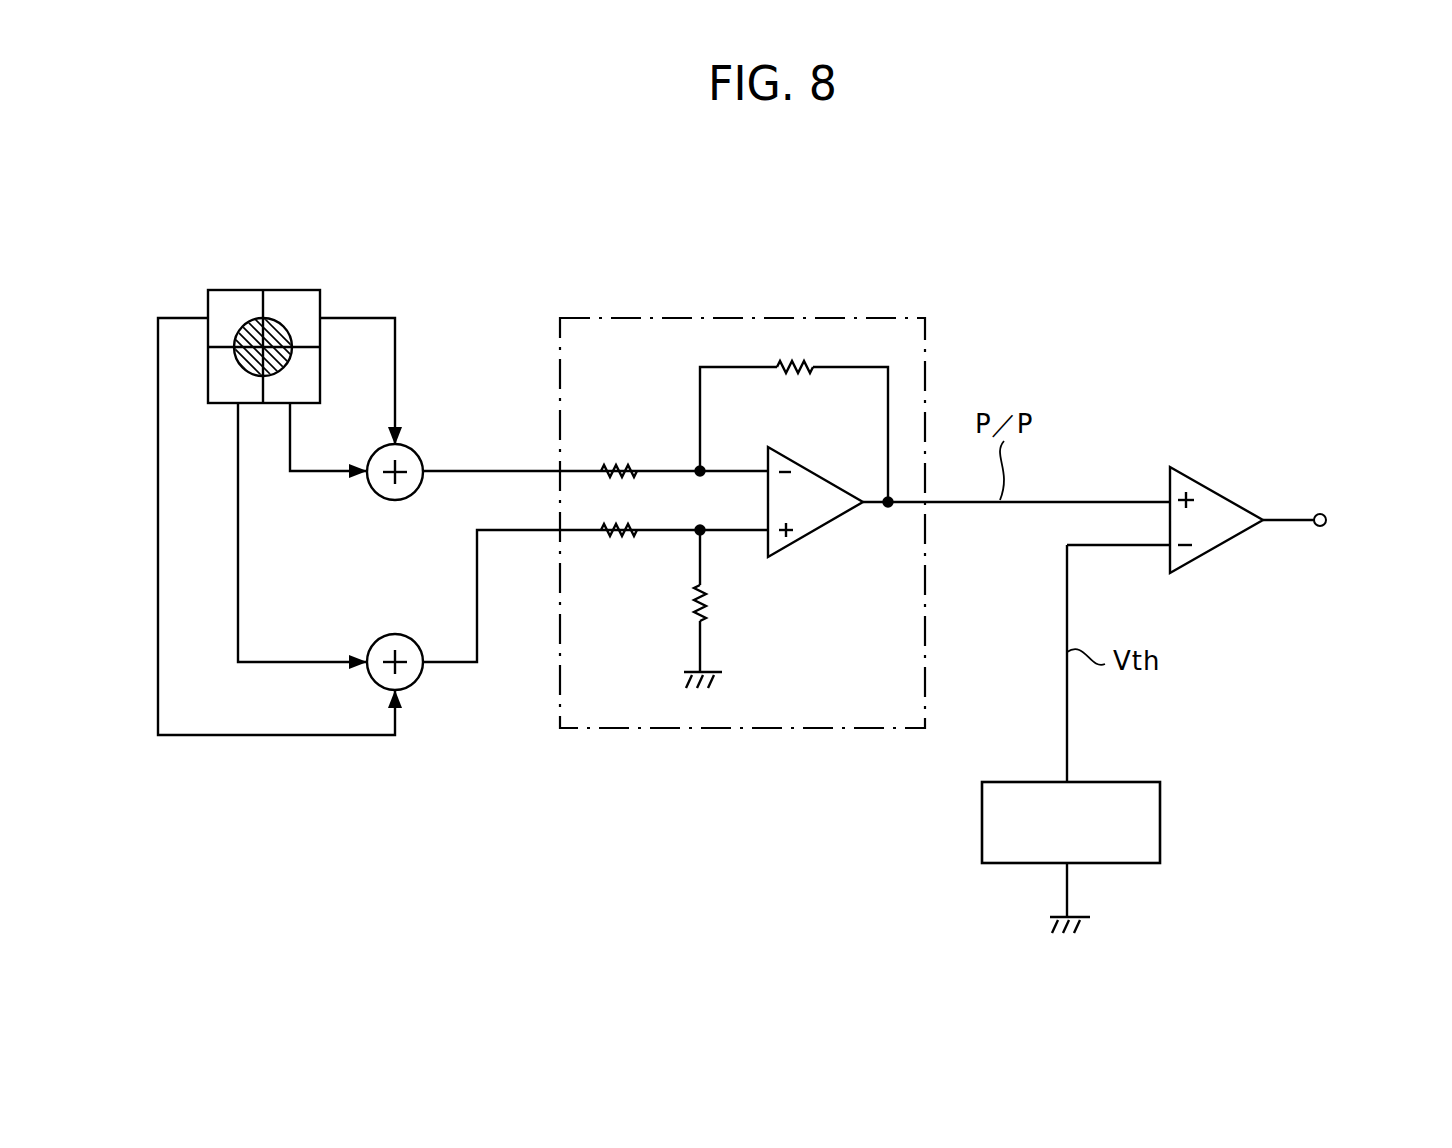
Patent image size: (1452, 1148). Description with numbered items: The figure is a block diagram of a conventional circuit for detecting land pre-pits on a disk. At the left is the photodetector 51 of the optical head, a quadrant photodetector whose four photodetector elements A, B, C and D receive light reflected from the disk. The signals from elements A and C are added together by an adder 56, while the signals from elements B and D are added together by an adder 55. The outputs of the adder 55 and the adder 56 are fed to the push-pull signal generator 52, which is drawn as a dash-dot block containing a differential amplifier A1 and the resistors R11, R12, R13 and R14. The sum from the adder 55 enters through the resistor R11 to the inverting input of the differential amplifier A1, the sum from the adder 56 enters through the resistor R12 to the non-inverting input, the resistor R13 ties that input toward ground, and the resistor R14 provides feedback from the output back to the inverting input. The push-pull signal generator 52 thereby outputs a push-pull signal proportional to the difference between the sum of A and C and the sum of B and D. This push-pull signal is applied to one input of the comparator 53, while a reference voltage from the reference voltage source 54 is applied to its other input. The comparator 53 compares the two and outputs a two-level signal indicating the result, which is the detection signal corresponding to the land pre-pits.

The photodetector 51 is at (287, 290).
The push-pull signal generator 52 is at (755, 318).
The comparator 53 is at (1207, 480).
The reference voltage source 54 is at (1160, 820).
The adder 55 is at (418, 446).
The adder 56 is at (395, 634).
The resistor R11 is at (624, 452).
The resistor R12 is at (622, 553).
The resistor R13 is at (724, 609).
The resistor R14 is at (794, 431).
The differential amplifier A1 is at (828, 523).